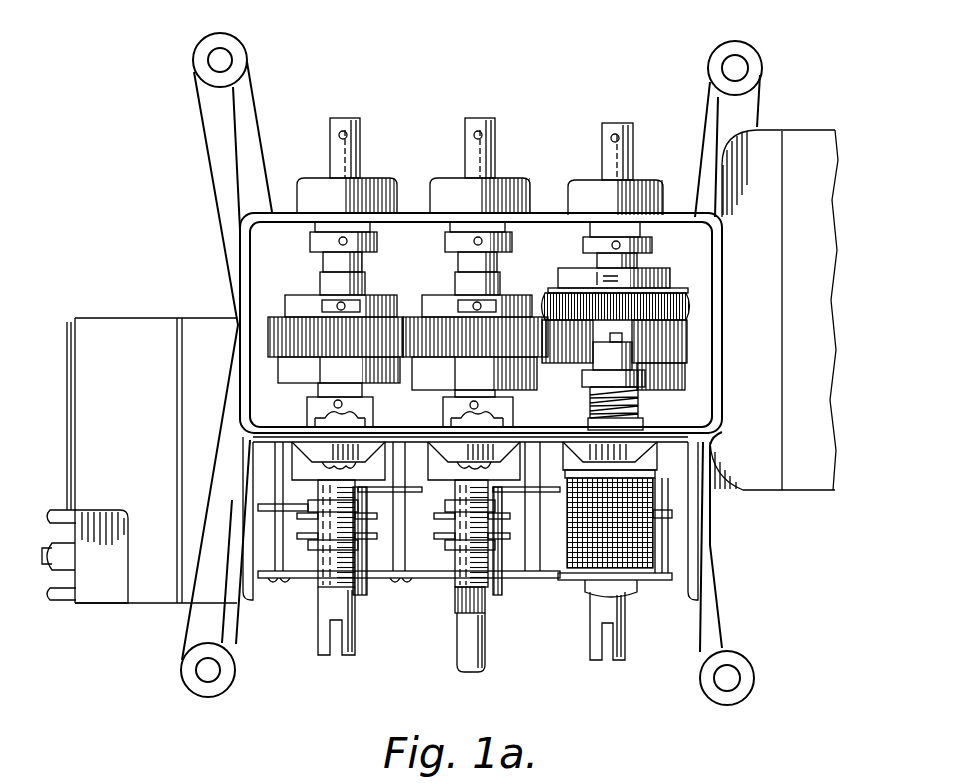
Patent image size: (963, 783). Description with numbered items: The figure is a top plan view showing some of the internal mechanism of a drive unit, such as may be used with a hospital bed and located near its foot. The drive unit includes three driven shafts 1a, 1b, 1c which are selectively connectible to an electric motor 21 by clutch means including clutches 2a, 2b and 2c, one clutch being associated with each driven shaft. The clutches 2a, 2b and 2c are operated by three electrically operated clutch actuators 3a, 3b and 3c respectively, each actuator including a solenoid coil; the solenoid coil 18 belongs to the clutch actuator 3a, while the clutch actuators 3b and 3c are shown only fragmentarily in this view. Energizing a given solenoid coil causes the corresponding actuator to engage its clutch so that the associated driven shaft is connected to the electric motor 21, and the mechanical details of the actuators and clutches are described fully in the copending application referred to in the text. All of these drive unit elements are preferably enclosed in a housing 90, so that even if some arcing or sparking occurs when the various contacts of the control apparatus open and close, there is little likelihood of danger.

The driven shaft 1a is at (614, 125).
The driven shaft 1b is at (480, 122).
The driven shaft 1c is at (340, 122).
The clutch 2a is at (565, 378).
The clutch 2b is at (430, 374).
The clutch 2c is at (292, 372).
The electrically operated clutch actuator 3a is at (650, 447).
The electrically operated clutch actuator 3b is at (492, 450).
The electrically operated clutch actuator 3c is at (382, 450).
The solenoid coil 18 is at (655, 493).
The electric motor 21 is at (812, 474).
The housing 90 is at (115, 322).